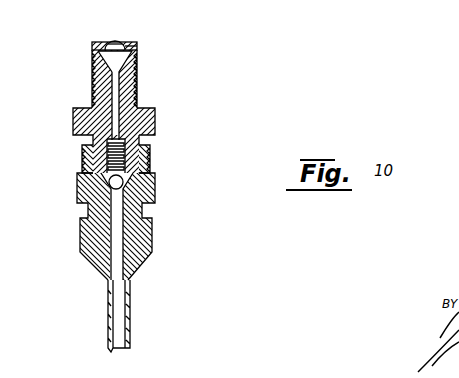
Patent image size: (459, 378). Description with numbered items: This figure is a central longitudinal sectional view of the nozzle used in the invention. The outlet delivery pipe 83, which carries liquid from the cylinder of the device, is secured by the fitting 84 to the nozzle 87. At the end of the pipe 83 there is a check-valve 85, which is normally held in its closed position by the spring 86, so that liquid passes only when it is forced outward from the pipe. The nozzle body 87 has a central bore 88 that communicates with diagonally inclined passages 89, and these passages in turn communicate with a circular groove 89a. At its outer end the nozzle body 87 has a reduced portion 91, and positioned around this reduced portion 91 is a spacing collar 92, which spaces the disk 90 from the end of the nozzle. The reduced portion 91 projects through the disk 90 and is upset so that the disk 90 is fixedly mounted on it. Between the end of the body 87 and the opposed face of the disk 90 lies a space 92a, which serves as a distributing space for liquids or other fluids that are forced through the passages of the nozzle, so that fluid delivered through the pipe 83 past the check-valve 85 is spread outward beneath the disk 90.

The outlet delivery pipe 83 is at (128, 318).
The fitting 84 is at (143, 207).
The check-valve 85 is at (120, 180).
The spring 86 is at (142, 150).
The nozzle 87 is at (100, 98).
The central bore 88 is at (114, 97).
The diagonally inclined passages 89 is at (93, 70).
The circular groove 89a is at (133, 58).
The disk 90 is at (104, 42).
The reduced portion 91 is at (122, 47).
The spacing collar 92 is at (126, 50).
The space 92a is at (112, 40).